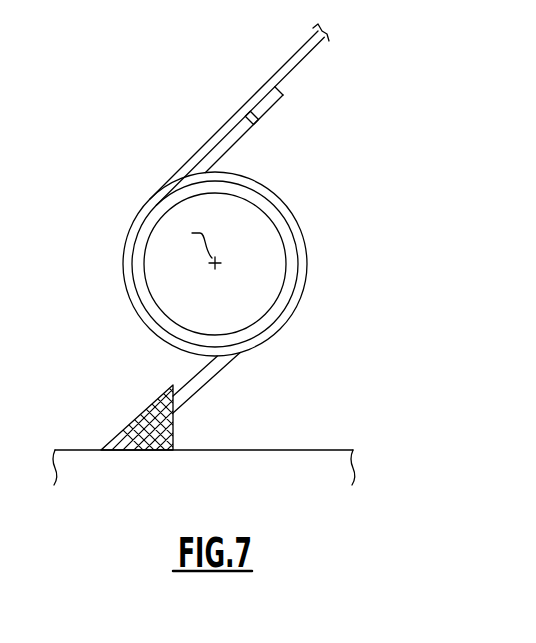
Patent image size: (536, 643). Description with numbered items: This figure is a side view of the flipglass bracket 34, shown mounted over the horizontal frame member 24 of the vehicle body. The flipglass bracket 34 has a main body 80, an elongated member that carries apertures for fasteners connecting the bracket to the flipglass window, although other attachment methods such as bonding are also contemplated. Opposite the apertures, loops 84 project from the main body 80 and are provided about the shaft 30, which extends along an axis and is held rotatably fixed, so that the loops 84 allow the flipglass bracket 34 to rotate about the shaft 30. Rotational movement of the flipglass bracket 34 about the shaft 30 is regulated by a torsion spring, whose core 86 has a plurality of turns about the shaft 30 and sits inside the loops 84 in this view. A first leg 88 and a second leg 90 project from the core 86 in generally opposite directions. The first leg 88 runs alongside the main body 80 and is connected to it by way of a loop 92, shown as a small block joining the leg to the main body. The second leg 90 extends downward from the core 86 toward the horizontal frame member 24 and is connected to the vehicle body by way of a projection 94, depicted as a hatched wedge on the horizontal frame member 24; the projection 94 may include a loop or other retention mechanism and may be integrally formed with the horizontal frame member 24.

The horizontal frame member 24 is at (228, 485).
The shaft 30 is at (168, 282).
The flipglass bracket 34 is at (259, 218).
The main body 80 is at (297, 65).
The loops 84 is at (307, 268).
The core 86 is at (289, 241).
The first leg 88 is at (227, 141).
The second leg 90 is at (221, 362).
The loop 92 is at (261, 120).
The projection 94 is at (174, 429).